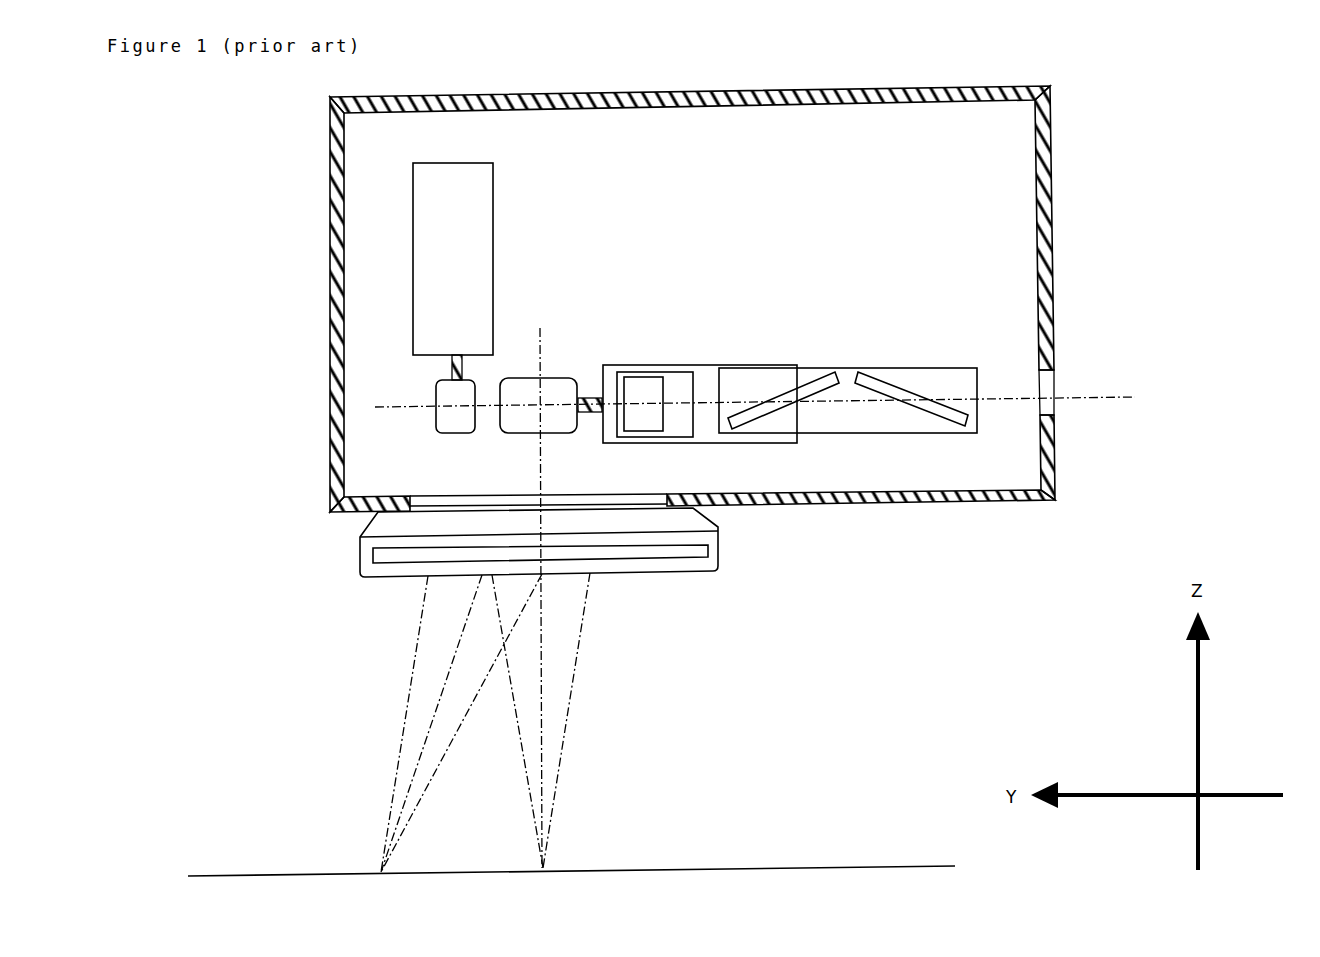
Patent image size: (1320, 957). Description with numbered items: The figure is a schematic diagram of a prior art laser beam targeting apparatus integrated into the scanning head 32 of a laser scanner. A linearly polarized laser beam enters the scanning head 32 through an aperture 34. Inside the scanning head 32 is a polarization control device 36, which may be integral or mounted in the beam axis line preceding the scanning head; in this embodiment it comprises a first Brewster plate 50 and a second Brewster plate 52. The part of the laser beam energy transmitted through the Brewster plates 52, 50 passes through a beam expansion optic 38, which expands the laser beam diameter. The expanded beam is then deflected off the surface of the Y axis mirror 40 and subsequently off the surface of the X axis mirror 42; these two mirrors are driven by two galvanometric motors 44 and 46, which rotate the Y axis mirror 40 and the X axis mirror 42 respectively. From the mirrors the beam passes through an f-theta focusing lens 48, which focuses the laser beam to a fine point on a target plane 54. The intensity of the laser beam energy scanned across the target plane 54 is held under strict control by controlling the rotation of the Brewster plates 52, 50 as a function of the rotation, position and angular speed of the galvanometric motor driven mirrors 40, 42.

The scanning head 32 is at (1050, 112).
The aperture 34 is at (1062, 382).
The polarization control device 36 is at (853, 365).
The beam expansion optic 38 is at (656, 369).
The Y axis mirror 40 is at (567, 375).
The X axis mirror 42 is at (455, 441).
The galvanometric motor 44 is at (498, 206).
The galvanometric motor 46 is at (706, 362).
The f-theta focusing lens 48 is at (683, 566).
The first Brewster plate 50 is at (932, 422).
The second Brewster plate 52 is at (803, 407).
The target plane 54 is at (259, 868).